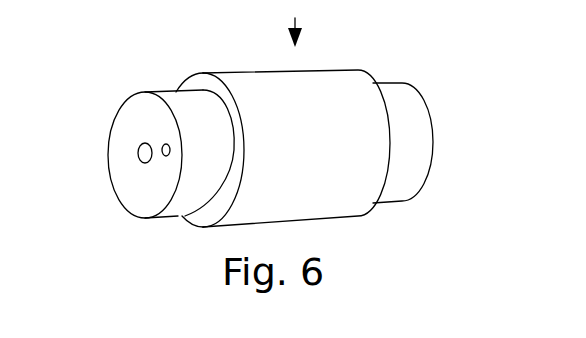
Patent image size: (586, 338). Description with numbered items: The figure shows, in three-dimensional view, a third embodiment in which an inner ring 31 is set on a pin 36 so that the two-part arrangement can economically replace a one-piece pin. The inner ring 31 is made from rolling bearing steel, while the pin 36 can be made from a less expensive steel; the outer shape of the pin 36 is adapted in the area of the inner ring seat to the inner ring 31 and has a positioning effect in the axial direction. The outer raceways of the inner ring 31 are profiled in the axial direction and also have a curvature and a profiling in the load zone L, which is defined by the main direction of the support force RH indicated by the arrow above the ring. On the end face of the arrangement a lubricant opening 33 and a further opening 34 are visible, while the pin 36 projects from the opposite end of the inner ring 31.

The inner ring 31 is at (380, 148).
The lubricant opening 33 is at (164, 158).
The opening 34 is at (138, 152).
The pin 36 is at (412, 173).
The load zone L is at (240, 72).
The main direction of support force RH is at (296, 22).